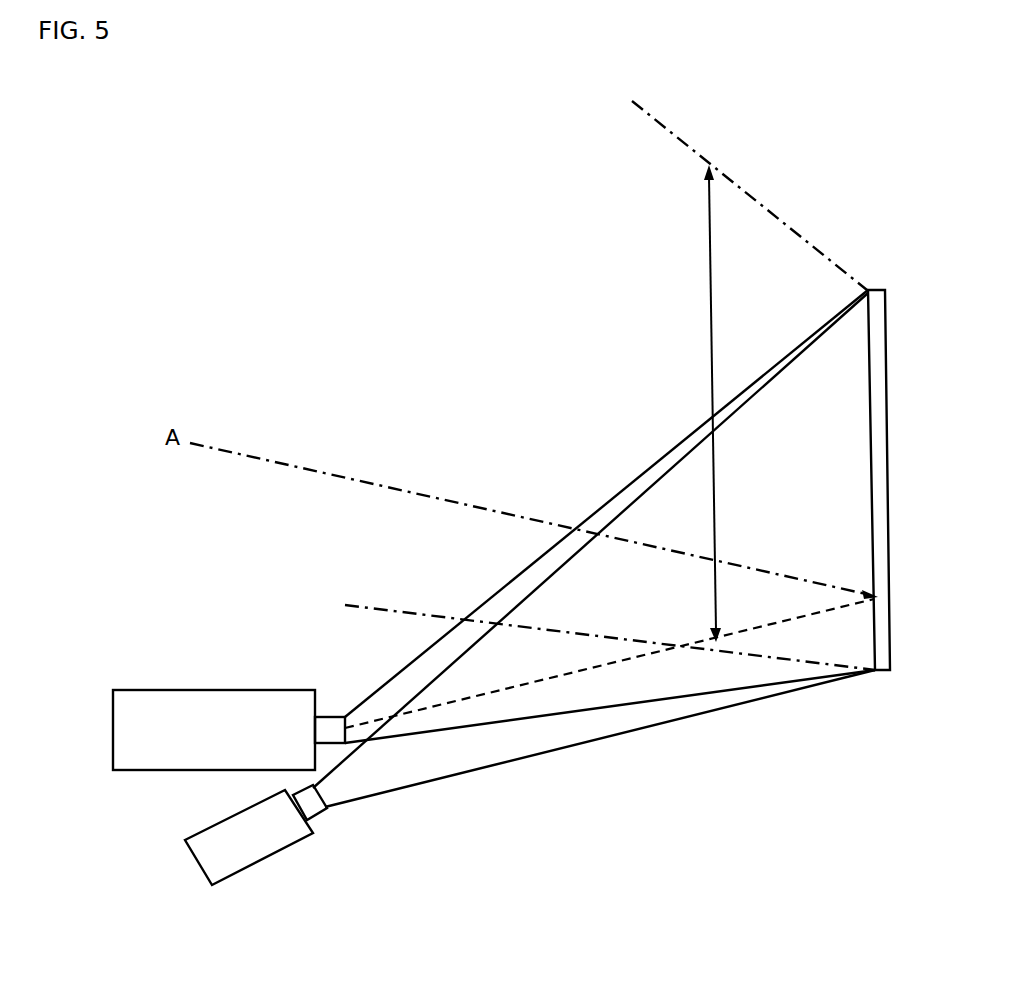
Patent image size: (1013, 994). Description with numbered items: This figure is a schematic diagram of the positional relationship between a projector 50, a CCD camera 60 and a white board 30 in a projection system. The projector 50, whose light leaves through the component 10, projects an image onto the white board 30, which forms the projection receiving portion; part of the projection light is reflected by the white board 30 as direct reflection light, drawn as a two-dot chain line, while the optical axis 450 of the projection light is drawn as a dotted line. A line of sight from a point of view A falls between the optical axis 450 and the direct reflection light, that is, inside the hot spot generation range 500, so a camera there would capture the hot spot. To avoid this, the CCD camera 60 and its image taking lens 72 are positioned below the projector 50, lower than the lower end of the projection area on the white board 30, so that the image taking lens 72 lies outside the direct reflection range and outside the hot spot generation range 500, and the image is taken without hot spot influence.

The projector component 10 is at (337, 716).
The white board 30 is at (880, 289).
The projector 50 is at (170, 684).
The CCD camera 60 is at (250, 868).
The image taking lens 72 is at (325, 816).
The optical axis of the projection light 450 is at (687, 648).
The hot spot generation range 500 is at (714, 503).